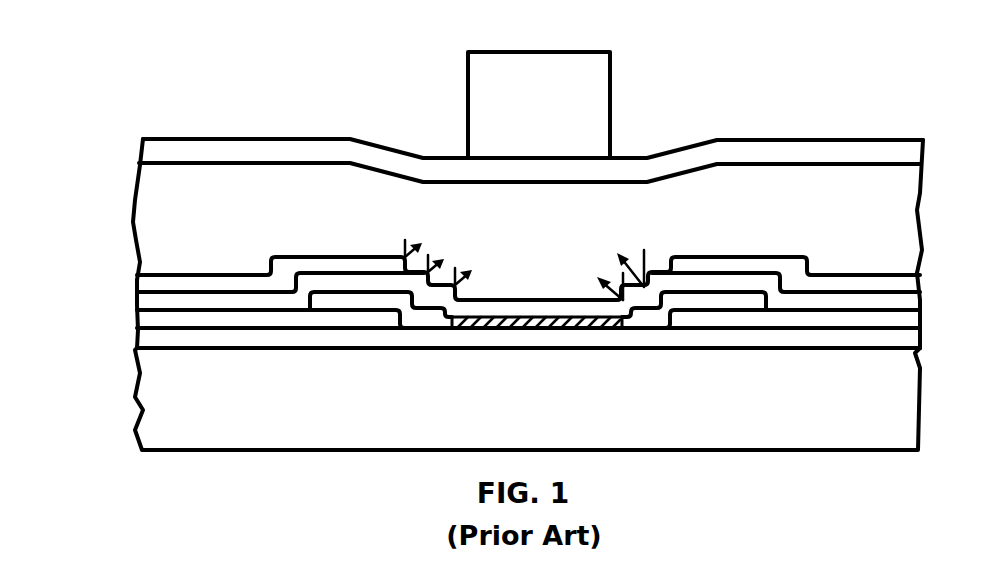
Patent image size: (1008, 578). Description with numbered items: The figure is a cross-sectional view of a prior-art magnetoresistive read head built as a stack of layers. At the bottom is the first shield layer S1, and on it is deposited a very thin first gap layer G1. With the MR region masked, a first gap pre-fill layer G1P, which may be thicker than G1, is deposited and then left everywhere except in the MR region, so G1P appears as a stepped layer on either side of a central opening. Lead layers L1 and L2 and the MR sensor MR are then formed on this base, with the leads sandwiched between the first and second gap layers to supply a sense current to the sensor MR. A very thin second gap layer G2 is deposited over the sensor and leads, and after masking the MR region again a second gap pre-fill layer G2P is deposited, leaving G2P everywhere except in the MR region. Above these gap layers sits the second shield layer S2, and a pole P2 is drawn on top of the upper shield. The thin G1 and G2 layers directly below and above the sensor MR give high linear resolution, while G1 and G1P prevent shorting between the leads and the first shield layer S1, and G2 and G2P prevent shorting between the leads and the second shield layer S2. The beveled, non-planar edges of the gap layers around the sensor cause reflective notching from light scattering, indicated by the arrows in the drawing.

The second pole P2 is at (539, 105).
The second shield layer S2 is at (528, 209).
The first shield layer S1 is at (527, 399).
The second gap pre-fill layer G2P is at (137, 277).
The second gap layer G2 is at (137, 304).
The first gap pre-fill layer G1P is at (137, 320).
The first gap layer G1 is at (137, 338).
The lead layer L1 is at (340, 300).
The lead layer L2 is at (717, 302).
The MR sensor MR is at (573, 322).